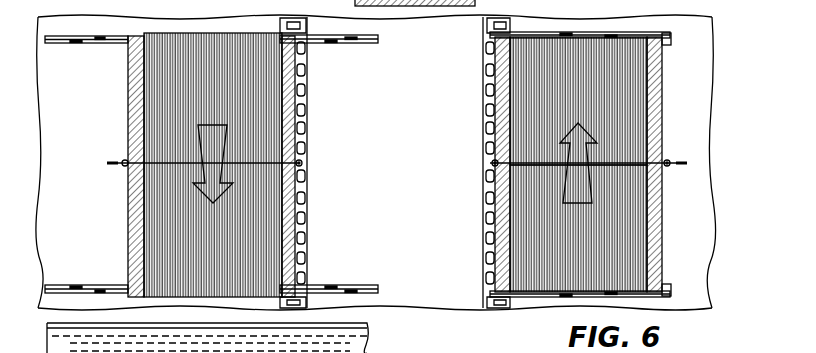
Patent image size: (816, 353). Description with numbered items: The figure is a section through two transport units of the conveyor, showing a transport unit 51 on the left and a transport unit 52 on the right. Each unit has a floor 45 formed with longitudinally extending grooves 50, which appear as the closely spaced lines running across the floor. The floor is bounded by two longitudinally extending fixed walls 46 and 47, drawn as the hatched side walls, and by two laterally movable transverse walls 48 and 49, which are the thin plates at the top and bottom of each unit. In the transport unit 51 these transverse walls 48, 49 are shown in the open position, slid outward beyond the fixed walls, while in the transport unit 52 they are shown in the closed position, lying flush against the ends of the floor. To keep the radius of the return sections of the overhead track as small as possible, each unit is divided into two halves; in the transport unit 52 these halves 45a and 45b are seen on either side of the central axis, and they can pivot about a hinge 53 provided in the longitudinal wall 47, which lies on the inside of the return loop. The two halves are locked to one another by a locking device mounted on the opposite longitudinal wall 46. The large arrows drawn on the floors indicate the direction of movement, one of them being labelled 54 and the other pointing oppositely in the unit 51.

The floor 45 is at (225, 45).
The first half of transport unit 45a is at (635, 90).
The second half of transport unit 45b is at (635, 252).
The longitudinally extending fixed wall 46 is at (130, 110).
The longitudinally extending fixed wall 47 is at (292, 140).
The laterally movable transverse wall 48 is at (552, 38).
The laterally movable transverse wall 49 is at (537, 294).
The longitudinally extending grooves 50 is at (262, 98).
The transport unit 51 is at (112, 213).
The transport unit 52 is at (470, 113).
The hinge 53 is at (490, 165).
The air flow arrow 54 is at (670, 160).